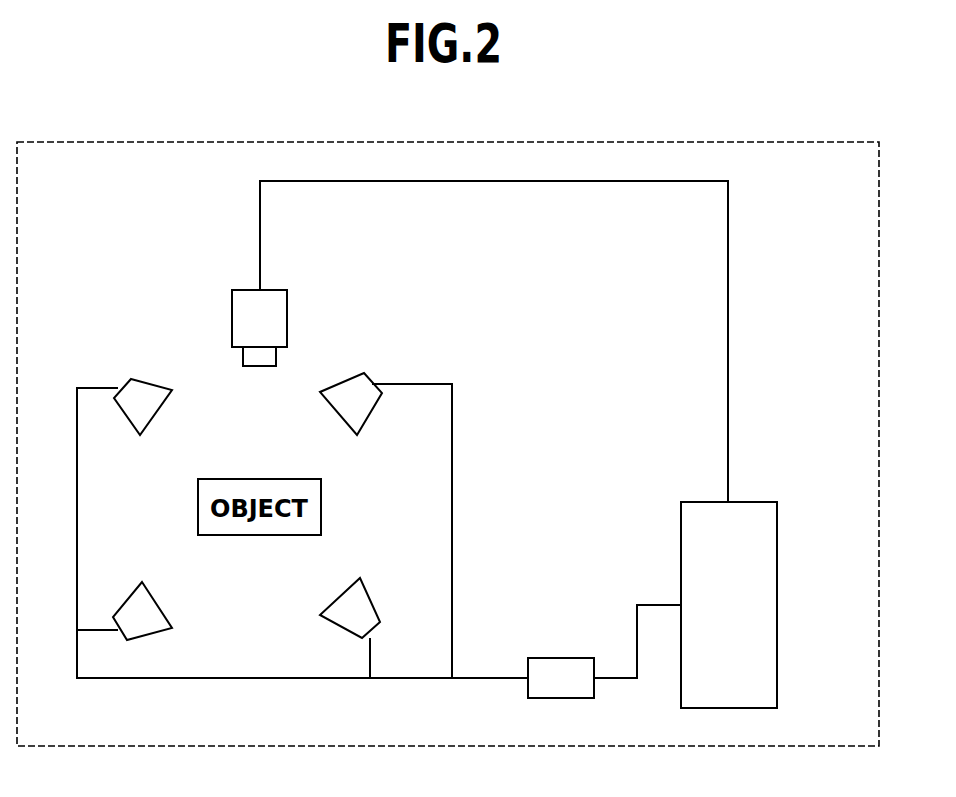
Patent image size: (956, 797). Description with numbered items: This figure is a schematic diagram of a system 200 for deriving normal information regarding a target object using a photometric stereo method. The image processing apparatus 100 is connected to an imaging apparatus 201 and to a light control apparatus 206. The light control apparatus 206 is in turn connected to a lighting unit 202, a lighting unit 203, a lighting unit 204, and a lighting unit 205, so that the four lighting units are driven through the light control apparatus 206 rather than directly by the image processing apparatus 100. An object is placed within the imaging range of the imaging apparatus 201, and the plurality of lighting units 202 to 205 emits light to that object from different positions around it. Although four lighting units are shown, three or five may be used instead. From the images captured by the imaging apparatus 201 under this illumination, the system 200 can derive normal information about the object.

The system 200 is at (693, 142).
The imaging apparatus 201 is at (275, 290).
The lighting unit 202 is at (350, 379).
The lighting unit 203 is at (398, 580).
The lighting unit 204 is at (158, 381).
The lighting unit 205 is at (183, 580).
The light control apparatus 206 is at (565, 658).
The image processing apparatus 100 is at (760, 502).